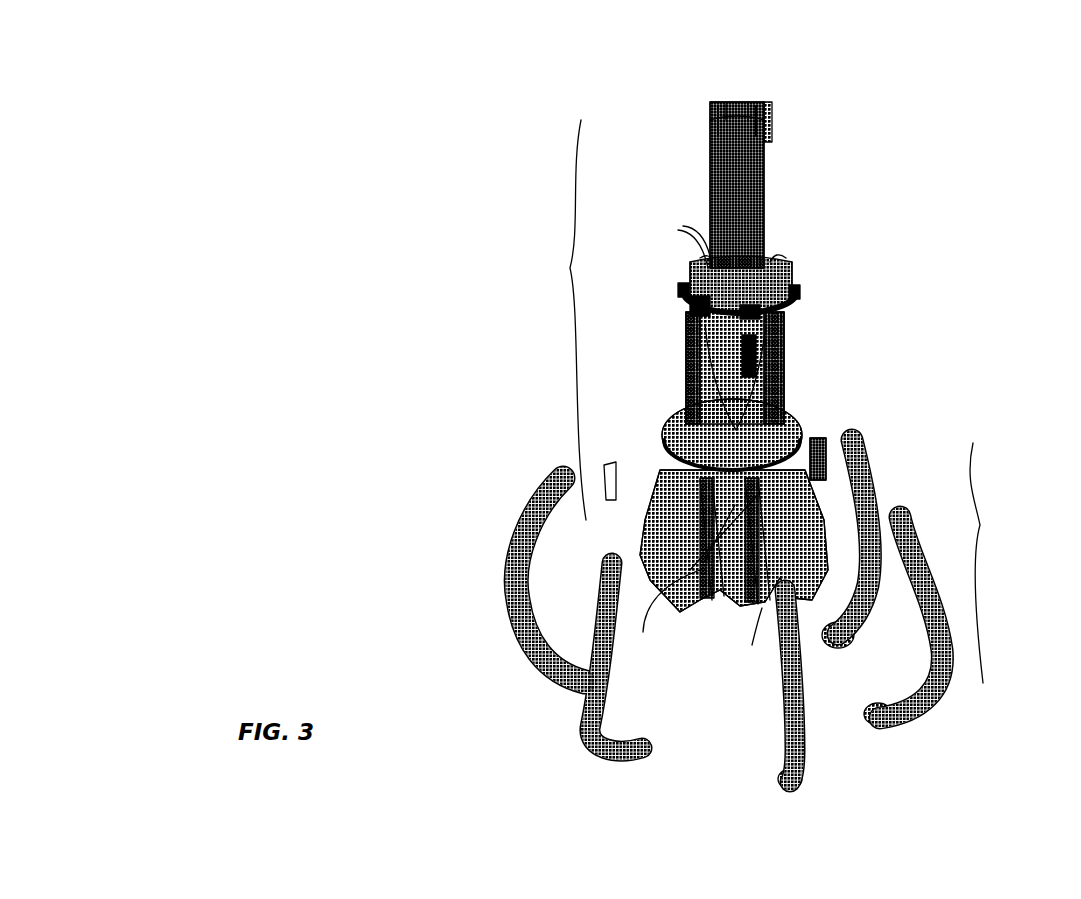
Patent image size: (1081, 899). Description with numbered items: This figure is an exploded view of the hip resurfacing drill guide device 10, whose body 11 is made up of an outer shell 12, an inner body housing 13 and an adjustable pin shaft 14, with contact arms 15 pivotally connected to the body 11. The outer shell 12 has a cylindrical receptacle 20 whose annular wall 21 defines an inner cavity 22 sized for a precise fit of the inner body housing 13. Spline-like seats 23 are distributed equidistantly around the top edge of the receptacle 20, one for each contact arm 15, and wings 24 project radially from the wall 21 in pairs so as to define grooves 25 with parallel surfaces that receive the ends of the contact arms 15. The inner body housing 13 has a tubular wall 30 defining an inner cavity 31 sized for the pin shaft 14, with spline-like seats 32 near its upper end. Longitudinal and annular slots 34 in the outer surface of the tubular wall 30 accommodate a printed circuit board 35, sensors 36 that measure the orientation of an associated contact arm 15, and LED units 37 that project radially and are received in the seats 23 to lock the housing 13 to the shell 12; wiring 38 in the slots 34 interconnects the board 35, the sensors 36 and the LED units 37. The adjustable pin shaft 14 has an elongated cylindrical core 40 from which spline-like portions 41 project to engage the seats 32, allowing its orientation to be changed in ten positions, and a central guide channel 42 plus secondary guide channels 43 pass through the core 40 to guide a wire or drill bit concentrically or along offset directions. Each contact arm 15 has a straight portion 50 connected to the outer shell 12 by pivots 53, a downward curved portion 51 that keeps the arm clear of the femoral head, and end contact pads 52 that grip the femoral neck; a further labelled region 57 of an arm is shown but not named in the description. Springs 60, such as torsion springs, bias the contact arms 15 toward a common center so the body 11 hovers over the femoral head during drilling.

The hip resurfacing drill guide device 10 is at (1003, 185).
The body 11 is at (558, 276).
The outer shell 12 is at (764, 391).
The inner body housing 13 is at (754, 291).
The adjustable pin shaft 14 is at (774, 145).
The contact arms 15 is at (988, 524).
The cylindrical receptacle 20 is at (678, 428).
The annular wall 21 is at (672, 478).
The inner cavity 22 is at (780, 416).
The seats 23 is at (686, 410).
The wings 24 is at (732, 571).
The grooves 25 is at (694, 574).
The tubular wall 30 is at (778, 298).
The inner cavity 31 is at (744, 278).
The seats 32 is at (678, 242).
The longitudinal and annular slots 34 is at (690, 338).
The printed circuit board 35 is at (756, 350).
The sensors 36 is at (742, 432).
The LED units 37 is at (678, 286).
The wiring 38 is at (690, 300).
The elongated cylindrical core 40 is at (712, 172).
The spline-like portions 41 is at (704, 118).
The central guide channel 42 is at (745, 102).
The secondary guide channel 43 is at (730, 102).
The straight portion 50 is at (560, 498).
The downward curved portion 51 is at (512, 612).
The end contact pads 52 is at (757, 766).
The pivots 53 is at (608, 562).
The inner surface 57 is at (930, 664).
The springs 60 is at (612, 486).